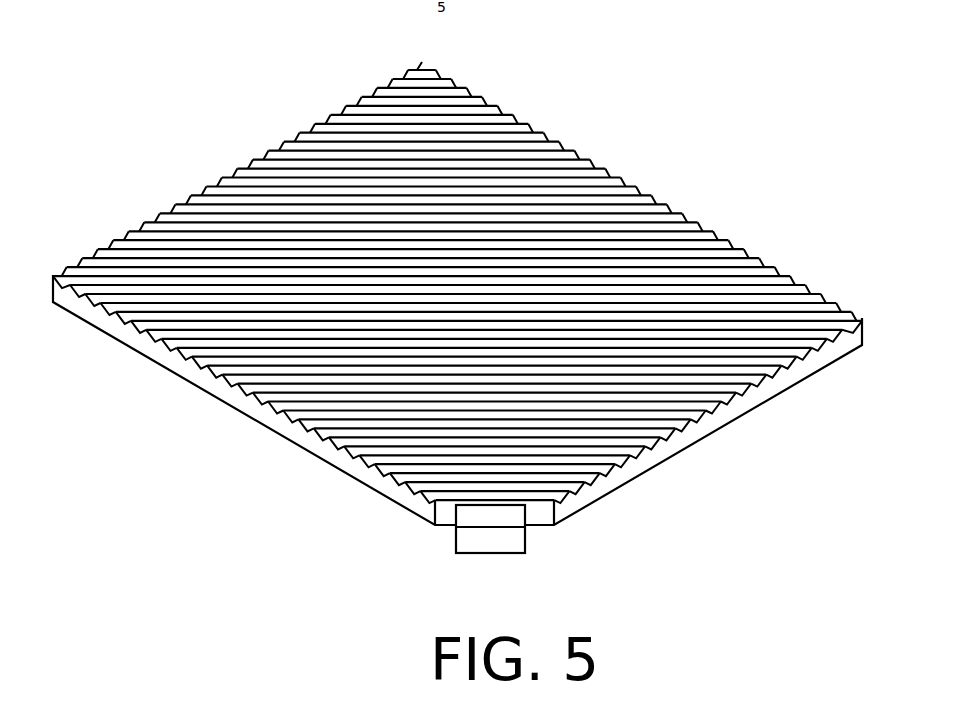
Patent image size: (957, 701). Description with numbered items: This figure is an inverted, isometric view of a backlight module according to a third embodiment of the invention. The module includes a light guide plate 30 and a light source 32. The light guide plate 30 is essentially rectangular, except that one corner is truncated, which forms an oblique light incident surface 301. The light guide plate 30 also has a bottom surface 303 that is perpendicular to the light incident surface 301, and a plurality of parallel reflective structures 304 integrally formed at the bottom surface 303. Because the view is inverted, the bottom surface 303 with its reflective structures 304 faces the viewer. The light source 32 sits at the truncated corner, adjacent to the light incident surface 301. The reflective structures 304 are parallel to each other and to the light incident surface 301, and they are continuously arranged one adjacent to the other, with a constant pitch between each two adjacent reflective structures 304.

The light guide plate 30 is at (683, 197).
The bottom surface 303 is at (750, 267).
The reflective structures 304 is at (610, 450).
The light incident surface 301 is at (540, 518).
The light source 32 is at (497, 540).